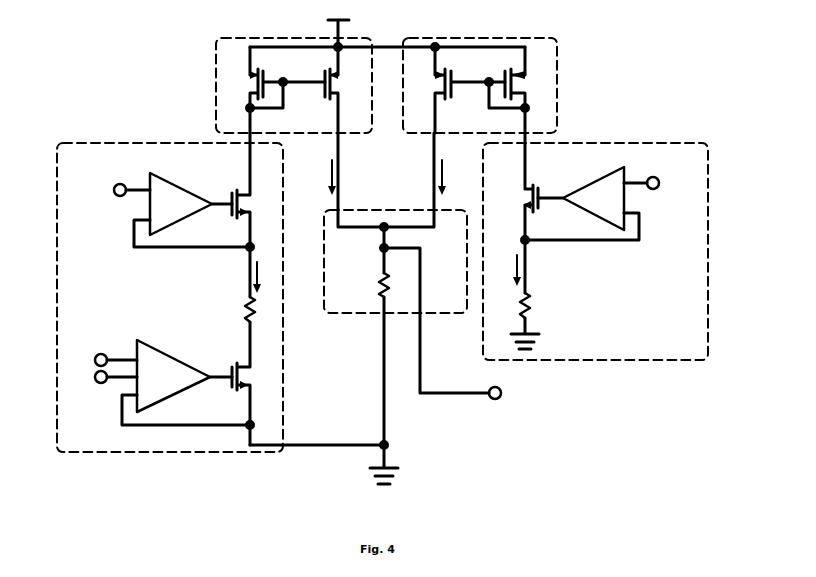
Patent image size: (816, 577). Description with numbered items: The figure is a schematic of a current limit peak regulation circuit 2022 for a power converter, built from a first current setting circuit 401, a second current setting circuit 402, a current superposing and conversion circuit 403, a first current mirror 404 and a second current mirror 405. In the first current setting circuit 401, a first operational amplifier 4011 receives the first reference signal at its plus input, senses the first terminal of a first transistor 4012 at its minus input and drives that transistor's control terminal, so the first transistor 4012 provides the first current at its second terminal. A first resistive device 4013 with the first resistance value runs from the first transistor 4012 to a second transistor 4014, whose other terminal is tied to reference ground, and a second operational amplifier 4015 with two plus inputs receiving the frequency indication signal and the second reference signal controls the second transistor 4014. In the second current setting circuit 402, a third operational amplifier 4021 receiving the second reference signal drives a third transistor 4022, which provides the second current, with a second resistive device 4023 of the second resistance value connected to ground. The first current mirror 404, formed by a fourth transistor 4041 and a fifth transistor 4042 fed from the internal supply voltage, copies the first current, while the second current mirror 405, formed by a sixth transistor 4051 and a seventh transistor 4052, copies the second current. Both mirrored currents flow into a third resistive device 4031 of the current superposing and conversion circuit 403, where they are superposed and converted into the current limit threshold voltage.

The current limit peak regulation circuit 2022 is at (108, 26).
The first current setting circuit 401 is at (57, 237).
The second current setting circuit 402 is at (708, 222).
The current superposing and conversion circuit 403 is at (352, 316).
The first current mirror 404 is at (216, 42).
The second current mirror 405 is at (557, 42).
The first operational amplifier 4011 is at (182, 210).
The first transistor 4012 is at (226, 190).
The first resistive device 4013 is at (242, 297).
The second transistor 4014 is at (232, 364).
The second operational amplifier 4015 is at (172, 382).
The third operational amplifier 4021 is at (592, 203).
The third transistor 4022 is at (543, 183).
The second resistive device 4023 is at (538, 293).
The third resistive device 4031 is at (360, 274).
The fourth transistor 4041 is at (265, 77).
The fifth transistor 4042 is at (322, 100).
The sixth transistor 4051 is at (504, 77).
The seventh transistor 4052 is at (447, 100).